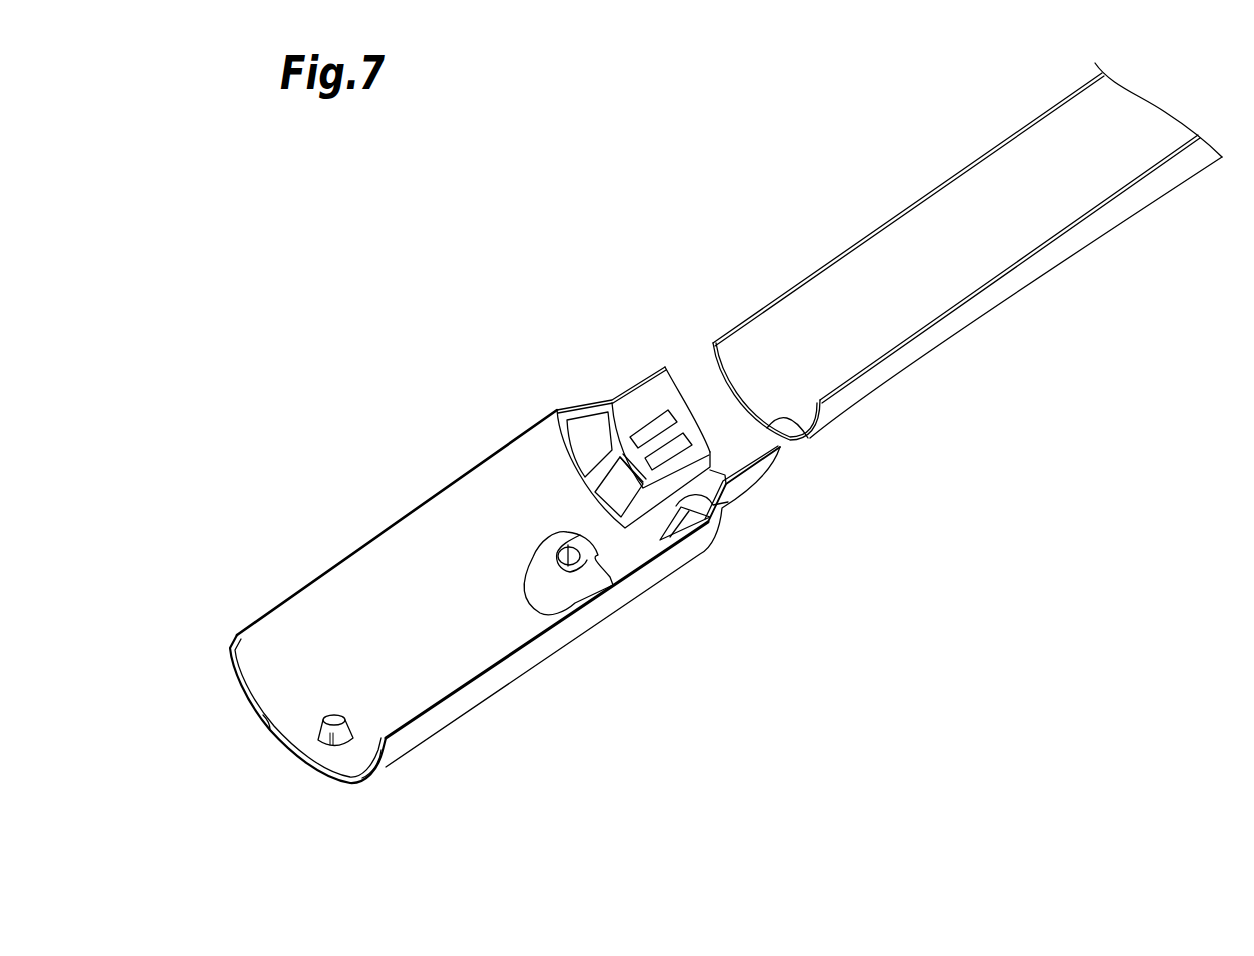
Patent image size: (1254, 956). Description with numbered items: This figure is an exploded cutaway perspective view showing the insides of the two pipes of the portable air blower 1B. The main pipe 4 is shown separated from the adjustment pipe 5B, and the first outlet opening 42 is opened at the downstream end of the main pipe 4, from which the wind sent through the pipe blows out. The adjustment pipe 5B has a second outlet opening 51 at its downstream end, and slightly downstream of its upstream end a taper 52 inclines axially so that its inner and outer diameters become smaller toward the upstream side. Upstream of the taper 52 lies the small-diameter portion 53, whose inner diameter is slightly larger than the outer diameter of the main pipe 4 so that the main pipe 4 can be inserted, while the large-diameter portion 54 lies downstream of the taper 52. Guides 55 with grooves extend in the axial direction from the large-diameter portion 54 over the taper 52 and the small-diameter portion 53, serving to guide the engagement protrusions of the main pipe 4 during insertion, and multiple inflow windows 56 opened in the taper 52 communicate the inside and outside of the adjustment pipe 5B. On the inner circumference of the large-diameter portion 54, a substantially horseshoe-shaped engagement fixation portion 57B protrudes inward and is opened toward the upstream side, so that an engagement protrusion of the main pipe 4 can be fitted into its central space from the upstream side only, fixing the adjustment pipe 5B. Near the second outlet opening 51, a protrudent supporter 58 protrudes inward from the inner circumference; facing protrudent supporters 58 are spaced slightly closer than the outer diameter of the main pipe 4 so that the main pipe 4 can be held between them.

The portable air blower 1B is at (527, 223).
The main pipe 4 is at (1018, 287).
The first outlet opening 42 is at (808, 438).
The adjustment pipe 5B is at (604, 743).
The second outlet opening 51 is at (256, 712).
The taper 52 is at (597, 477).
The small-diameter portion 53 is at (648, 397).
The large-diameter portion 54 is at (353, 590).
The guides 55 is at (663, 513).
The inflow windows 56 is at (624, 484).
The engagement fixation portion 57B is at (560, 572).
The protrudent supporter 58 is at (343, 737).